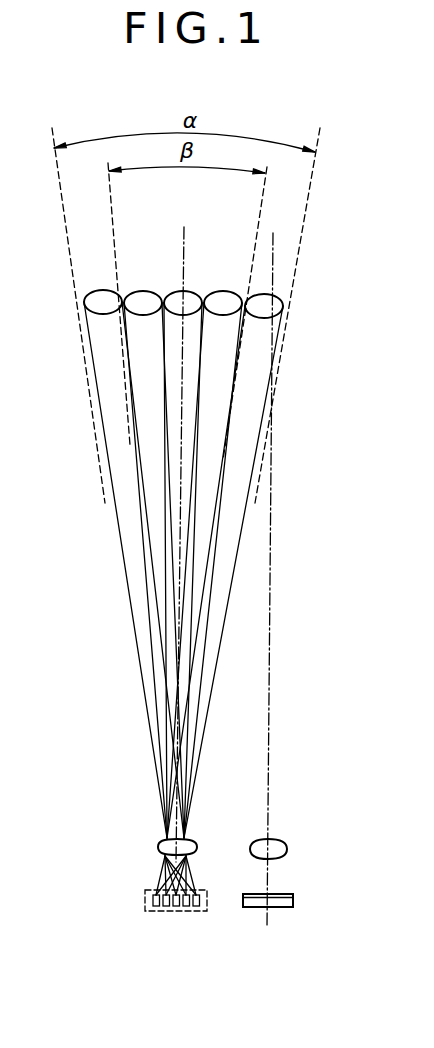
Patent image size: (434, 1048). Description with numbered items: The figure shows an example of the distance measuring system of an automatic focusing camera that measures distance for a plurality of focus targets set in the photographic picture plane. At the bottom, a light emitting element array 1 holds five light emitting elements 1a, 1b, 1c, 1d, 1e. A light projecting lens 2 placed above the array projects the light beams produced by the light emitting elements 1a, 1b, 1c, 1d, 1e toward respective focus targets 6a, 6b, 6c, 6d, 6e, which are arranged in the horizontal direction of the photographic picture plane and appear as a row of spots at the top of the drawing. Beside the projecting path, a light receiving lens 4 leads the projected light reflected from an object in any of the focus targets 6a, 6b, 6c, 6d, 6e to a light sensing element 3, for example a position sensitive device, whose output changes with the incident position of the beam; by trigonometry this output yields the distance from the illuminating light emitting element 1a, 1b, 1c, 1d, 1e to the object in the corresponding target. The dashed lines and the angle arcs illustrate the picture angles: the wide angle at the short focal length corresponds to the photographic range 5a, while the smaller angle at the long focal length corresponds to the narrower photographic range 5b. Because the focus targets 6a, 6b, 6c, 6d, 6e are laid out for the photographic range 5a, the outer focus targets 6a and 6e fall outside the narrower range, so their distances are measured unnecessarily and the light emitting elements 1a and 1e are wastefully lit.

The light emitting element array 1 is at (145, 901).
The light emitting element 1a is at (153, 909).
The light emitting element 1b is at (165, 909).
The light emitting element 1c is at (177, 909).
The light emitting element 1d is at (188, 910).
The light emitting element 1e is at (199, 910).
The light projecting lens 2 is at (162, 845).
The light sensing element 3 is at (282, 907).
The light receiving lens 4 is at (280, 847).
The photographic range at short focal length 5a is at (305, 208).
The photographic range at long focal length 5b is at (260, 208).
The focus target 6a is at (263, 295).
The focus target 6b is at (228, 297).
The focus target 6c is at (188, 297).
The focus target 6d is at (143, 297).
The focus target 6e is at (102, 295).